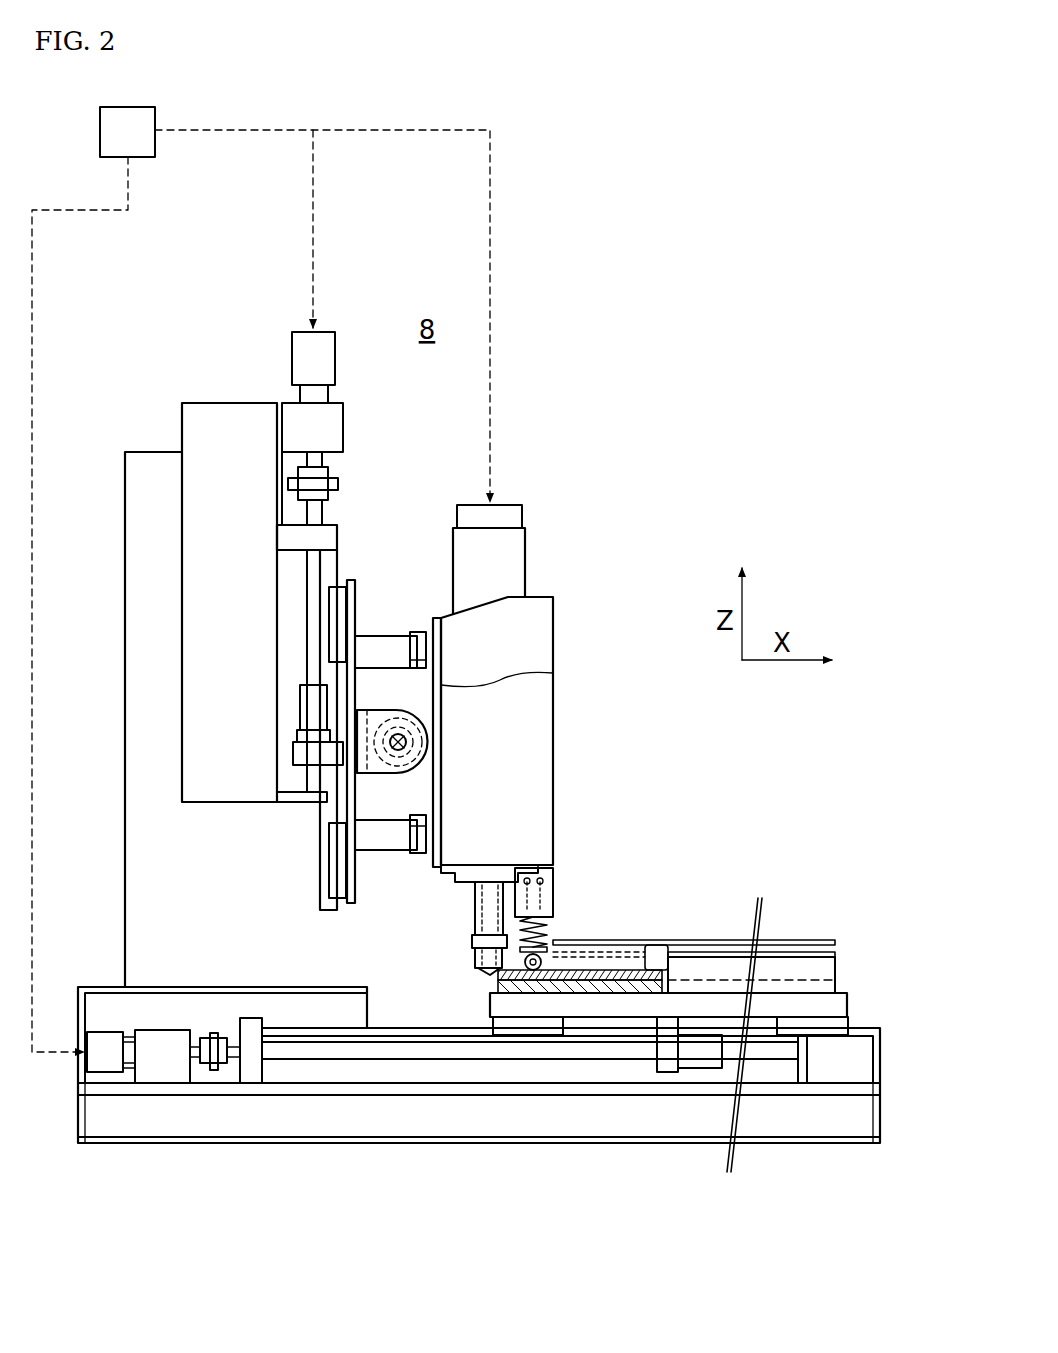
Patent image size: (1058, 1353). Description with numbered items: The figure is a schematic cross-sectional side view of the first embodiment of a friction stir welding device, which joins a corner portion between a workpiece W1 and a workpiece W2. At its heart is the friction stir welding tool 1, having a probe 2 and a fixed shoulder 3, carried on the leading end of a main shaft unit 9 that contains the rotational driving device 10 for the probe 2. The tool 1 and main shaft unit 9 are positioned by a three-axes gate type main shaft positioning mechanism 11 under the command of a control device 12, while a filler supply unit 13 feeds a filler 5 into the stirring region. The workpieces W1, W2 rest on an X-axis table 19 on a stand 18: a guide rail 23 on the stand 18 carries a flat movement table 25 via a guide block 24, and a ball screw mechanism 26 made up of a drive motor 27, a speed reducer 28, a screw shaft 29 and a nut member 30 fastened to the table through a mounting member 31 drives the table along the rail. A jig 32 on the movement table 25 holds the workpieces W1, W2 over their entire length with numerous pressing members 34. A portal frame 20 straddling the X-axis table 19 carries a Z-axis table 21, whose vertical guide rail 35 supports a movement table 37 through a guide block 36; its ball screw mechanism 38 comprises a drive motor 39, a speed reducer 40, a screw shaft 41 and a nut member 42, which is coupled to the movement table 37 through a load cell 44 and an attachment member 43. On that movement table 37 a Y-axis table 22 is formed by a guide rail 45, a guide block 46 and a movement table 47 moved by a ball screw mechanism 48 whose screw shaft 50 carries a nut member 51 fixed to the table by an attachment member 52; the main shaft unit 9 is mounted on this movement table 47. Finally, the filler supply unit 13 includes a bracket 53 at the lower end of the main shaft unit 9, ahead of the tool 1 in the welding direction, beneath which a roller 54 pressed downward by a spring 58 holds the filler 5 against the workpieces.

The friction stir welding tool 1 is at (462, 956).
The probe 2 is at (490, 971).
The fixed shoulder 3 is at (487, 972).
The filler 5 is at (656, 946).
The main shaft unit 9 is at (556, 730).
The rotational driving device 10 is at (518, 540).
The main shaft positioning mechanism 11 is at (232, 392).
The control device 12 is at (261, 579).
The filler supply unit 13 is at (576, 916).
The stand 18 is at (470, 1142).
The X-axis table 19 is at (872, 1000).
The portal frame 20 is at (183, 425).
The Z-axis table 21 is at (378, 508).
The Y-axis table 22 is at (440, 612).
The guide rail 23 is at (880, 1028).
The guide block 24 is at (540, 1030).
The movement table 25 is at (842, 991).
The ball screw mechanism 26 is at (308, 1082).
The drive motor 27 is at (106, 1040).
The speed reducer 28 is at (155, 1076).
The screw shaft 29 is at (400, 1062).
The nut member 30 is at (700, 1062).
The mounting member 31 is at (662, 1062).
The jig 32 is at (832, 956).
The pressing member 34 is at (720, 940).
The guide rail 35 is at (338, 562).
The guide block 36 is at (343, 600).
The movement table 37 is at (355, 880).
The ball screw mechanism 38 is at (330, 524).
The drive motor 39 is at (328, 340).
The speed reducer 40 is at (345, 422).
The screw shaft 41 is at (310, 598).
The nut member 42 is at (312, 698).
The attachment member 43 is at (307, 753).
The load cell 44 is at (293, 735).
The guide rail 45 is at (400, 650).
The guide block 46 is at (420, 634).
The movement table 47 is at (553, 673).
The ball screw mechanism 48 is at (375, 700).
The screw shaft 50 is at (380, 737).
The nut member 51 is at (385, 758).
The attachment member 52 is at (403, 775).
The bracket 53 is at (554, 878).
The roller 54 is at (543, 962).
The spring 58 is at (558, 915).
The workpiece W1 is at (825, 936).
The workpiece W2 is at (627, 960).